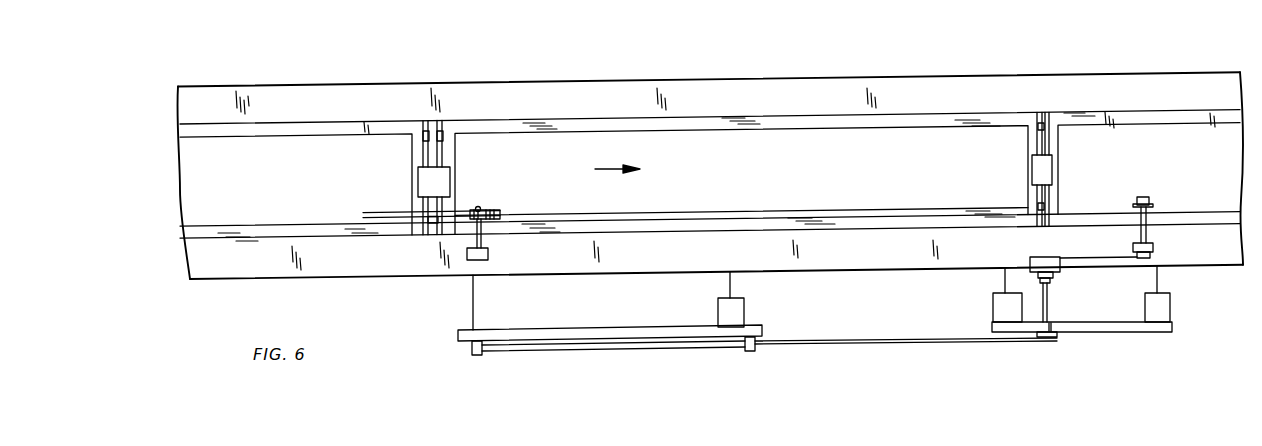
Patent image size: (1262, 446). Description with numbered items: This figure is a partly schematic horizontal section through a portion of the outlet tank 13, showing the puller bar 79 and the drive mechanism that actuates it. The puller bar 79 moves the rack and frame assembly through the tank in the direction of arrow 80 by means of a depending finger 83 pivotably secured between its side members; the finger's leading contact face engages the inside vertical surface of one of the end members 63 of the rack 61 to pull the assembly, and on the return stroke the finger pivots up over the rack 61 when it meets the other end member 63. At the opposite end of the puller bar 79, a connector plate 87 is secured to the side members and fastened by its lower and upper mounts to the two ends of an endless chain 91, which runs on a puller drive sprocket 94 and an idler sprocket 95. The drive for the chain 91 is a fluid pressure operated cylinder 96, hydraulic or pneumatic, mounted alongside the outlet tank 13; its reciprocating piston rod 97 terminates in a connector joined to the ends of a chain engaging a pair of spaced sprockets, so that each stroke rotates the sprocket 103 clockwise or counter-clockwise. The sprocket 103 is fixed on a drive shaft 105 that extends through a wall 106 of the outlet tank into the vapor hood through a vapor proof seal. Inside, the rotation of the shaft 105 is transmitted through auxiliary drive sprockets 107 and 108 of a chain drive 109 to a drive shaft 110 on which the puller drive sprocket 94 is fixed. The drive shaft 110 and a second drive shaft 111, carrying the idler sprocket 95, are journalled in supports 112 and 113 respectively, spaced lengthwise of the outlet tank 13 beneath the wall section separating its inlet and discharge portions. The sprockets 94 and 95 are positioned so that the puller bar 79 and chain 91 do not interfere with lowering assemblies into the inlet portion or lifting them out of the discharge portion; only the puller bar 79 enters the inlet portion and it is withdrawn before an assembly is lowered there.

The outlet tank 13 is at (710, 173).
The rack 61 is at (497, 119).
The end member 63 is at (415, 148).
The arrow 80 is at (607, 169).
The depending finger 83 is at (383, 214).
The puller bar 79 is at (433, 224).
The idler sprocket 95 is at (480, 210).
The connector plate 87 is at (501, 214).
The drive shaft 111 is at (483, 243).
The support 113 is at (489, 255).
The endless chain 91 is at (757, 190).
The puller drive sprocket 94 is at (1149, 200).
The drive shaft 110 is at (1147, 232).
The support 112 is at (1154, 250).
The auxiliary drive sprocket 107 is at (1031, 258).
The chain drive 109 is at (1118, 255).
The auxiliary drive sprocket 108 is at (1140, 256).
The wall 106 is at (956, 269).
The drive shaft 105 is at (1050, 297).
The sprocket 103 is at (1058, 338).
The piston rod 97 is at (830, 342).
The fluid pressure operated cylinder 96 is at (566, 347).